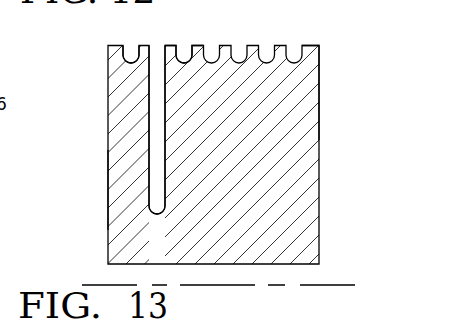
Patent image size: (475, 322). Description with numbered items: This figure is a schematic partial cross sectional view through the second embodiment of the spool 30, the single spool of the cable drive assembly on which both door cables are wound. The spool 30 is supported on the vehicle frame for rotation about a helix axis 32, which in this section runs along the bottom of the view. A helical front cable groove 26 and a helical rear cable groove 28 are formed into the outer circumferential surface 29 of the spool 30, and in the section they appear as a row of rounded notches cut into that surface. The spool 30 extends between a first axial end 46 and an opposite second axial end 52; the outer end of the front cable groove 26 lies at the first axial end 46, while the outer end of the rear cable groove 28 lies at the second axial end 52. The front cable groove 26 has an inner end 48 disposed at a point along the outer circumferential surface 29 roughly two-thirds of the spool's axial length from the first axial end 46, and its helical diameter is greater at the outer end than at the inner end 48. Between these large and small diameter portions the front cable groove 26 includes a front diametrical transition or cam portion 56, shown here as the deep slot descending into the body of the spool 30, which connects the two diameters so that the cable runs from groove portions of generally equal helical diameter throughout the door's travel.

The helical front cable groove 26 is at (178, 57).
The helical rear cable groove 28 is at (130, 60).
The outer circumferential surface 29 is at (311, 47).
The spool 30 is at (321, 180).
The helix axis 32 is at (317, 285).
The first axial end 46 is at (320, 88).
The inner end 48 is at (93, 130).
The front diametrical transition or cam portion 56 is at (160, 212).
The second axial end 52 is at (108, 190).